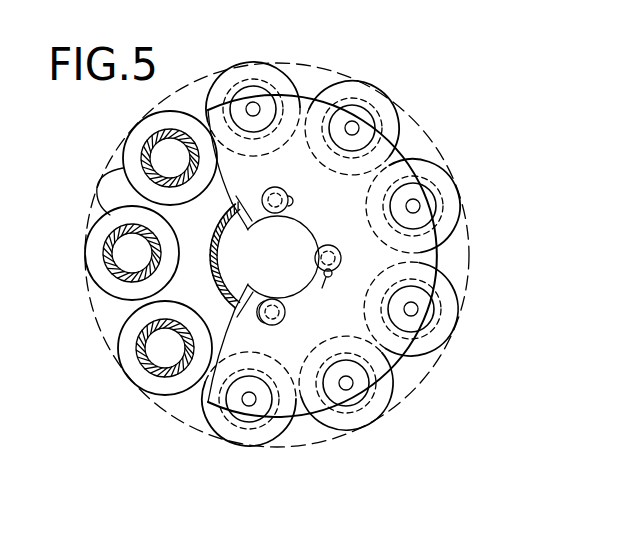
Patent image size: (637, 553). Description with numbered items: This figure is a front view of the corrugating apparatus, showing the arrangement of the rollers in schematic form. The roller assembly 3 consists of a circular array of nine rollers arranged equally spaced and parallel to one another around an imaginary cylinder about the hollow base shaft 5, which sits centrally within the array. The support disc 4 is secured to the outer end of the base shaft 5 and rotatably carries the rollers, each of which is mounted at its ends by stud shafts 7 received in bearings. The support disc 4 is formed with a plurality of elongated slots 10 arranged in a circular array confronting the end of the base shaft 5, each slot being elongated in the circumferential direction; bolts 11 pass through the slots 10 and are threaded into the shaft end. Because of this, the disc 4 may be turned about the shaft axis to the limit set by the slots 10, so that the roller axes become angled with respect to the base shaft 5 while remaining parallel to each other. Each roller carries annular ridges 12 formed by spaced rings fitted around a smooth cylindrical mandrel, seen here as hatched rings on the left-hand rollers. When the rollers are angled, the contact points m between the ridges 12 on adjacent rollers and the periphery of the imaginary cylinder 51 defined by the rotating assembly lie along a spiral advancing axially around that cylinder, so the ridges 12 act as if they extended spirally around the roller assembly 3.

The roller assembly 3 is at (77, 352).
The support disc 4 is at (400, 155).
The base shaft 5 is at (218, 257).
The stud shaft 7 is at (418, 206).
The elongated slots 10 is at (294, 202).
The bolts 11 is at (337, 248).
The annular ridges 12 is at (102, 178).
The imaginary cylinder 51 is at (328, 64).
The contact points m is at (130, 126).